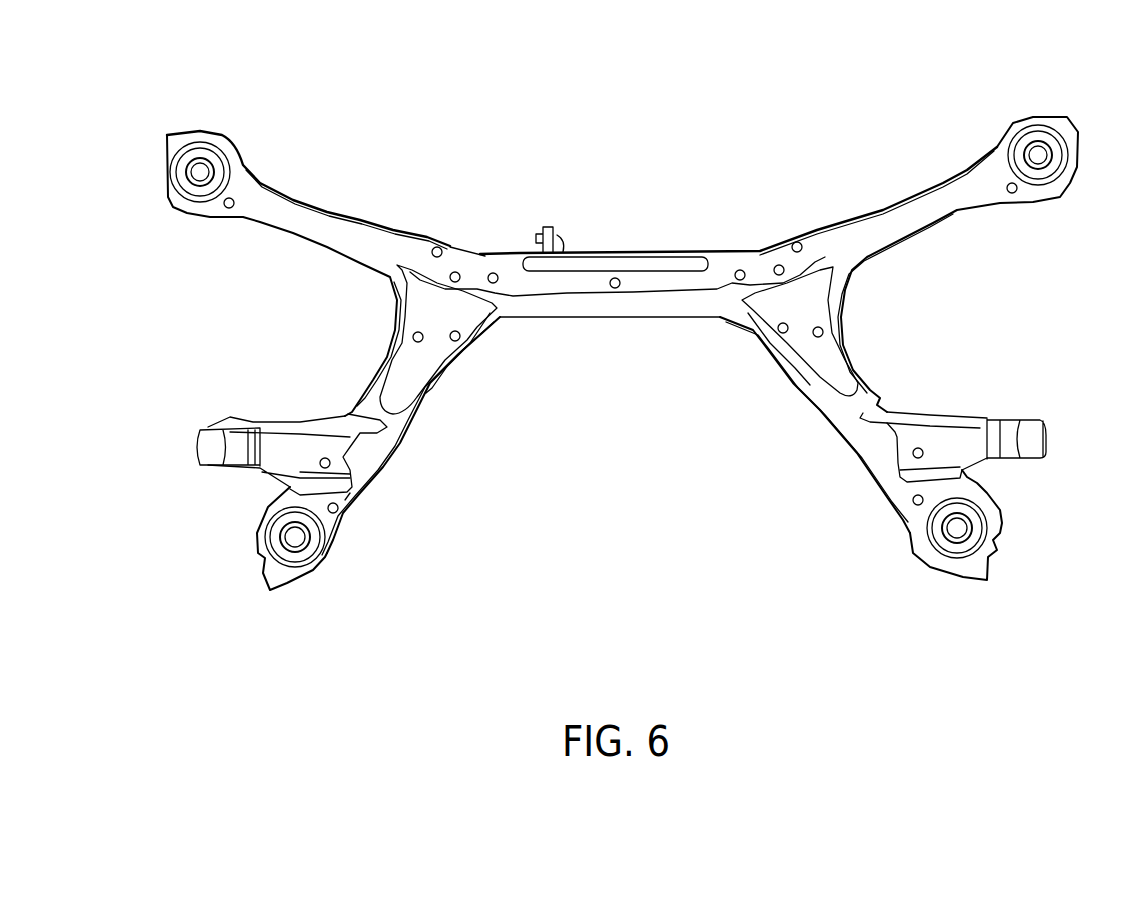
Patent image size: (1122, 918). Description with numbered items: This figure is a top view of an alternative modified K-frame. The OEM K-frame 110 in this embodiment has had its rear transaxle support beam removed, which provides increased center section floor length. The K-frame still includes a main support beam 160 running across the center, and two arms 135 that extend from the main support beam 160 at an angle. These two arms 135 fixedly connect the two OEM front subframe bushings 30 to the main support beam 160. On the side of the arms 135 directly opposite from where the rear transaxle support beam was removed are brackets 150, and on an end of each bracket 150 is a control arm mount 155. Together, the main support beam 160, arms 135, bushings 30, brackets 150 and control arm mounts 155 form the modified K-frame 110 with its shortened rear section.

The OEM K-frame 110 is at (665, 220).
The main support beam 160 is at (507, 263).
The arms 135 is at (397, 330).
The brackets 150 is at (282, 455).
The control arm mount 155 is at (198, 443).
The OEM front subframe bushings 30 is at (267, 535).